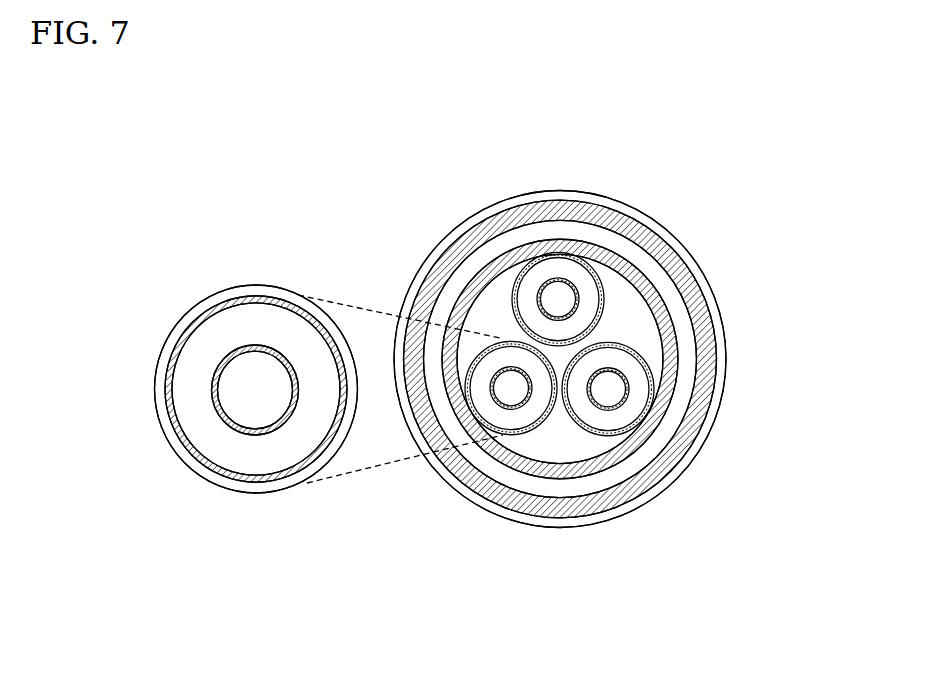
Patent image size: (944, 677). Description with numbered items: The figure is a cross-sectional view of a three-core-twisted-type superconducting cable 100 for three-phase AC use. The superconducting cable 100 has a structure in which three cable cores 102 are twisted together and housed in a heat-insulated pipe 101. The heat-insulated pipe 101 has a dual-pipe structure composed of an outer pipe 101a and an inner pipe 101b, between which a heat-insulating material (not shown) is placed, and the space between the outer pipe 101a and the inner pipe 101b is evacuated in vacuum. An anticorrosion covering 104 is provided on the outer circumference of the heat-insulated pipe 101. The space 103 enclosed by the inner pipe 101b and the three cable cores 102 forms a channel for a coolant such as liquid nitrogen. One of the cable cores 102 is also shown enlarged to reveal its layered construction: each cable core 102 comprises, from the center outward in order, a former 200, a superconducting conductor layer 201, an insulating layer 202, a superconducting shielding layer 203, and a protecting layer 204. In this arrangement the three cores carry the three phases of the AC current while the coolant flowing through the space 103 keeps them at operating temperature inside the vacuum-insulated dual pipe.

The superconducting cable 100 is at (477, 532).
The heat-insulated pipe 101 is at (777, 165).
The outer pipe 101a is at (683, 272).
The inner pipe 101b is at (620, 240).
The cable core 102 is at (508, 280).
The space 103 is at (648, 340).
The anticorrosion covering 104 is at (718, 415).
The former 200 is at (228, 385).
The superconducting conductor layer 201 is at (213, 405).
The insulating layer 202 is at (207, 438).
The superconducting shielding layer 203 is at (229, 483).
The protecting layer 204 is at (284, 480).